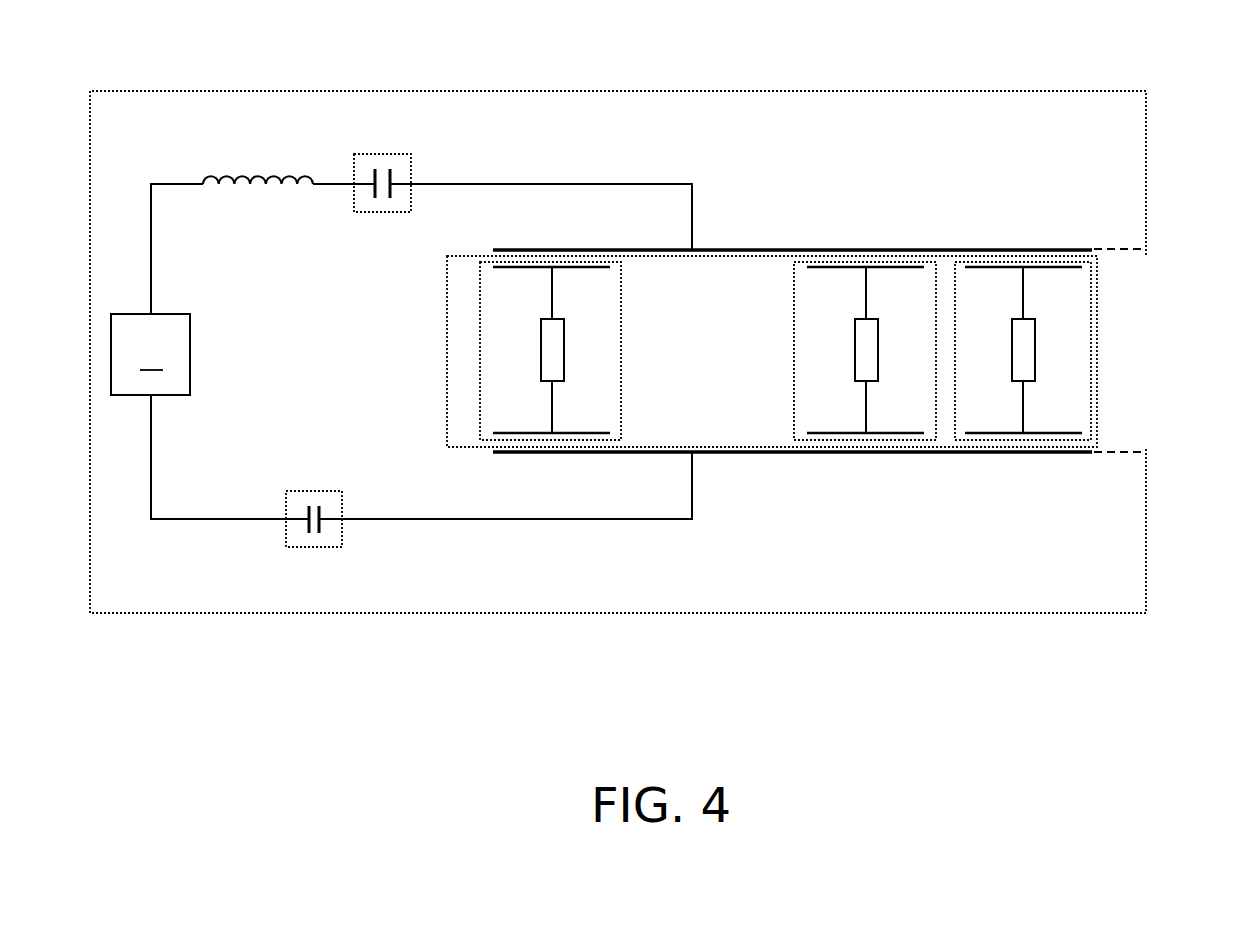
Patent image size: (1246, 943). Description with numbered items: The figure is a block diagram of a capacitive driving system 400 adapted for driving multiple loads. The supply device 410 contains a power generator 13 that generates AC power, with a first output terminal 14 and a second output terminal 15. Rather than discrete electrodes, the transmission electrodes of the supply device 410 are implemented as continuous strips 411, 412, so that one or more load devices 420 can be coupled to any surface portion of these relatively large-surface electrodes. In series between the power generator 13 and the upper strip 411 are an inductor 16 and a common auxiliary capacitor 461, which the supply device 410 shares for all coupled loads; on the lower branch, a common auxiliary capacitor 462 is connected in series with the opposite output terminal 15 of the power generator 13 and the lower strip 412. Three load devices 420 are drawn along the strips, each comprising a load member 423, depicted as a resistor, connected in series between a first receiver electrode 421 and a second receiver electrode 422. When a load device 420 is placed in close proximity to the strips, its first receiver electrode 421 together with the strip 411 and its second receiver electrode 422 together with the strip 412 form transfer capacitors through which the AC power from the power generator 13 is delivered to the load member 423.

The capacitive driving system 400 is at (210, 68).
The supply device 410 is at (1146, 156).
The power generator 13 is at (150, 354).
The first output terminal 14 is at (151, 223).
The second output terminal 15 is at (151, 482).
The inductor 16 is at (273, 177).
The common auxiliary capacitor 461 is at (360, 212).
The common auxiliary capacitor 462 is at (337, 490).
The continuous strip transmission electrode 411 is at (505, 249).
The continuous strip transmission electrode 412 is at (510, 453).
The load device 420 is at (1093, 347).
The first receiver electrode 421 is at (1052, 268).
The second receiver electrode 422 is at (1048, 433).
The load member 423 is at (1035, 355).